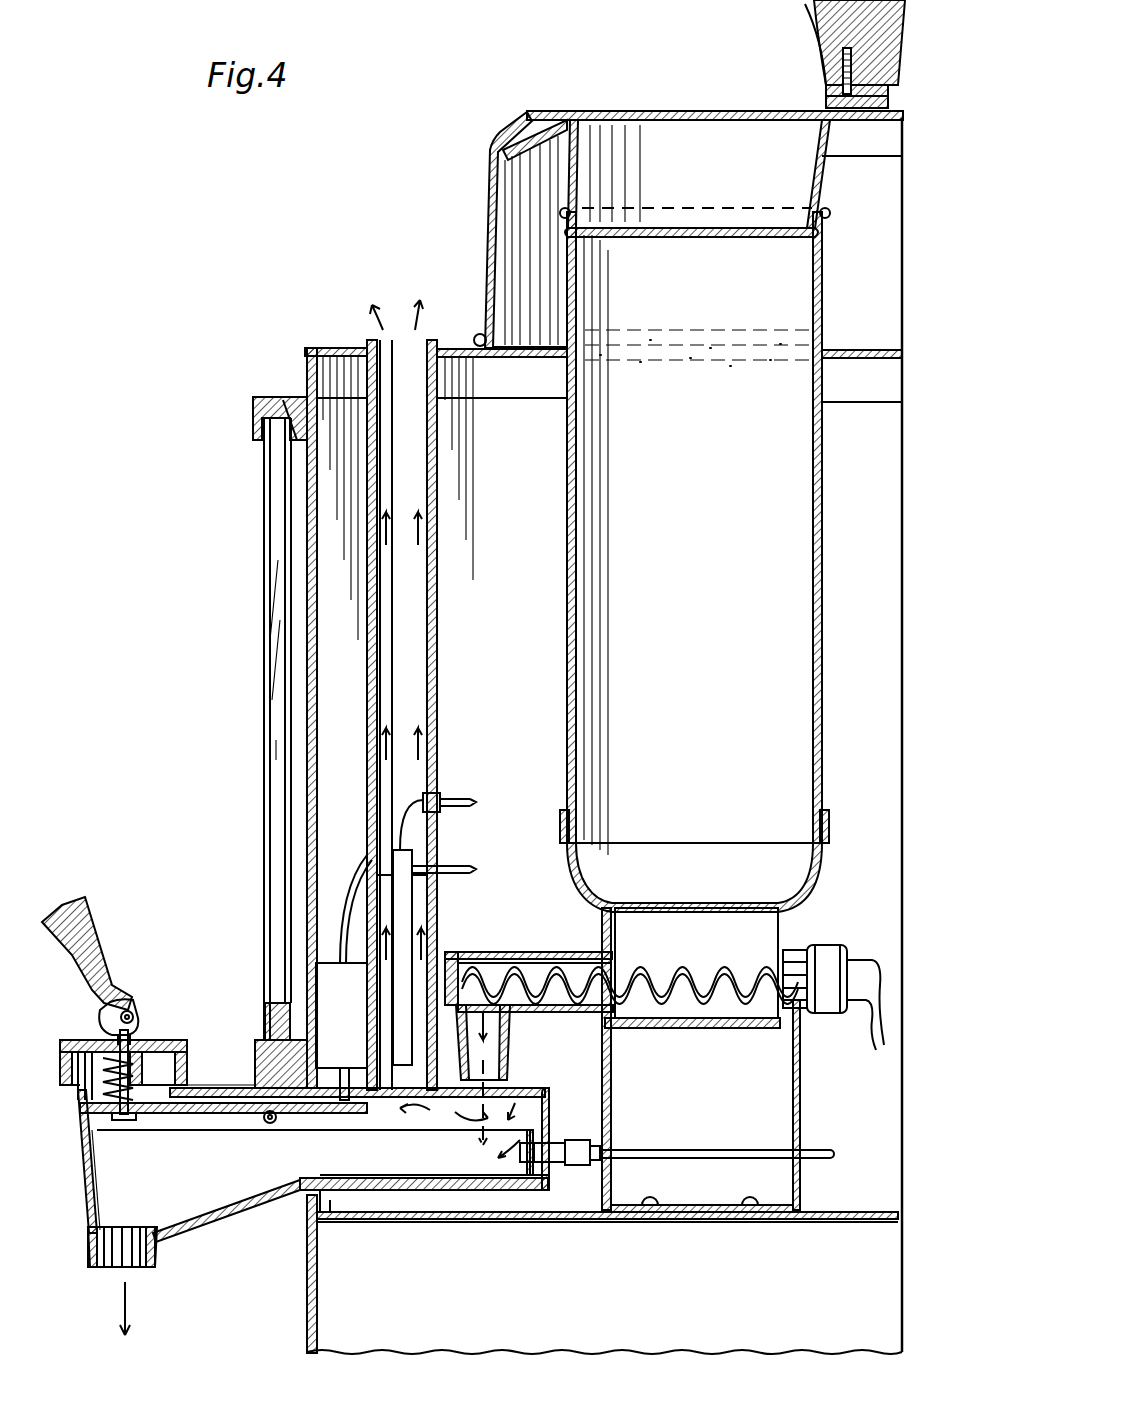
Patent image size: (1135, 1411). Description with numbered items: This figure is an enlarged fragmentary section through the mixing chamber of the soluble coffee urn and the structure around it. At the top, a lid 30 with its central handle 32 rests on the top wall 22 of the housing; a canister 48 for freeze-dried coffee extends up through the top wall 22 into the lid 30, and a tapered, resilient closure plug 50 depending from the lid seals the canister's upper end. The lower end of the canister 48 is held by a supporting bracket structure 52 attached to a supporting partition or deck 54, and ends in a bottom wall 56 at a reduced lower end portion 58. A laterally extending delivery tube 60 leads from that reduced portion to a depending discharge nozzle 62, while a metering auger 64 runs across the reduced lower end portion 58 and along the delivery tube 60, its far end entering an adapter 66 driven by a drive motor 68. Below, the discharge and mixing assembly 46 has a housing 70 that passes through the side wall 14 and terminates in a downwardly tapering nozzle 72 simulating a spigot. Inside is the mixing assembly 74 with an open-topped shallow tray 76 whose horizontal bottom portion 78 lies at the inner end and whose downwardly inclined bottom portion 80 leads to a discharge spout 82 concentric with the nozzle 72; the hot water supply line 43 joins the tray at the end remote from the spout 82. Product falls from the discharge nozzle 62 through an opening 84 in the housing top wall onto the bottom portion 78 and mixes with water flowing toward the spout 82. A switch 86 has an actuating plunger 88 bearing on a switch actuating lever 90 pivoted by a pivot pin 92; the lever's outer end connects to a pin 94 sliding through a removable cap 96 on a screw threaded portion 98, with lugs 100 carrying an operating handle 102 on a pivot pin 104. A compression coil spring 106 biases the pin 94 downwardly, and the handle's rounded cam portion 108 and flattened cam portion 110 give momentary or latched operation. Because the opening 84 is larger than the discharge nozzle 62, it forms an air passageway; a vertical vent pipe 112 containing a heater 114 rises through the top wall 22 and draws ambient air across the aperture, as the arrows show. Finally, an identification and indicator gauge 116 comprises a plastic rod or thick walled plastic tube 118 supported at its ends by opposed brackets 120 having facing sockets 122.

The side wall 14 is at (300, 533).
The top wall 22 is at (337, 348).
The lid 30 is at (490, 178).
The central handle 32 is at (812, 12).
The hot water supply line 43 is at (662, 1155).
The discharge and mixing assembly 46 is at (237, 1054).
The canister 48 is at (567, 548).
The closure plug 50 is at (590, 160).
The supporting bracket structure 52 is at (798, 1097).
The supporting partition or deck 54 is at (835, 1222).
The bottom wall 56 is at (690, 1024).
The reduced lower end portion 58 is at (790, 915).
The delivery tube 60 is at (470, 955).
The discharge nozzle 62 is at (508, 1045).
The metering auger 64 is at (665, 968).
The adapter 66 is at (806, 948).
The drive motor 68 is at (830, 952).
The housing 70 is at (547, 1192).
The nozzle 72 is at (84, 1140).
The mixing assembly 74 is at (236, 1225).
The tray 76 is at (255, 1185).
The horizontal bottom portion 78 is at (447, 1192).
The downwardly inclined bottom portion 80 is at (172, 1235).
The discharge spout 82 is at (112, 1265).
The opening 84 is at (530, 1100).
The switch 86 is at (328, 987).
The actuating plunger 88 is at (342, 1075).
The switch actuating lever 90 is at (240, 1108).
The pivot pin 92 is at (275, 1120).
The pin 94 is at (118, 1122).
The removable cap 96 is at (195, 1092).
The screw threaded portion 98 is at (70, 1085).
The lugs 100 is at (131, 1014).
The operating handle 102 is at (145, 895).
The pivot pin 104 is at (127, 1012).
The compression coil spring 106 is at (88, 1090).
The rounded cam portion 108 is at (100, 1022).
The flattened cam portion 110 is at (135, 1027).
The vent pipe 112 is at (438, 535).
The heater 114 is at (412, 852).
The identification and indicator gauge 116 is at (254, 659).
The plastic rod or thick walled plastic tube 118 is at (276, 748).
The bracket 120 is at (255, 415).
The socket 122 is at (283, 405).